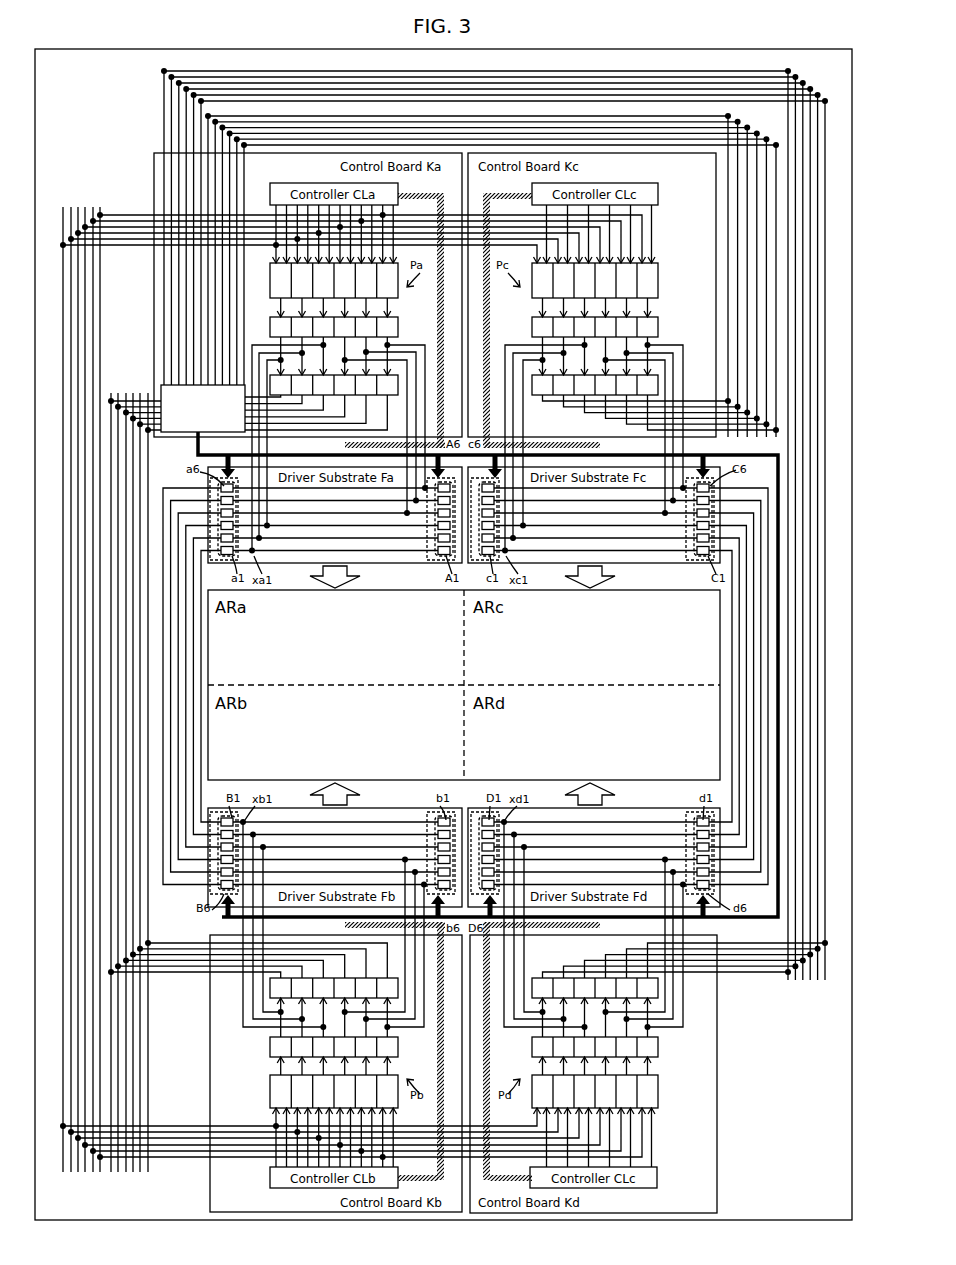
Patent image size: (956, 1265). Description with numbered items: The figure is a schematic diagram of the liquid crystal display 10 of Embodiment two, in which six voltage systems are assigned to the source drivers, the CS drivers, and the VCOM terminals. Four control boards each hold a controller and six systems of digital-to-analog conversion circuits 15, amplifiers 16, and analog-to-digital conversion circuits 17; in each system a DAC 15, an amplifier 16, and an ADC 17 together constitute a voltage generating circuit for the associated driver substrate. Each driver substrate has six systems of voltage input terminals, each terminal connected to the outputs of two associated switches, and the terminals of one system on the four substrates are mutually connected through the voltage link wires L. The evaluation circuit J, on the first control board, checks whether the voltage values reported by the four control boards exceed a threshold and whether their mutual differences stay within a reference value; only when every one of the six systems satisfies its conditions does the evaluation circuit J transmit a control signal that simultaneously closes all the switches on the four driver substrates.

The liquid crystal display 10 is at (101, 91).
The digital-to-analog conversion circuit 15 is at (464, 685).
The amplifier 16 is at (464, 687).
The analog-to-digital conversion circuit 17 is at (464, 686).
The evaluation circuit J is at (203, 408).
The voltage link wire L is at (172, 483).